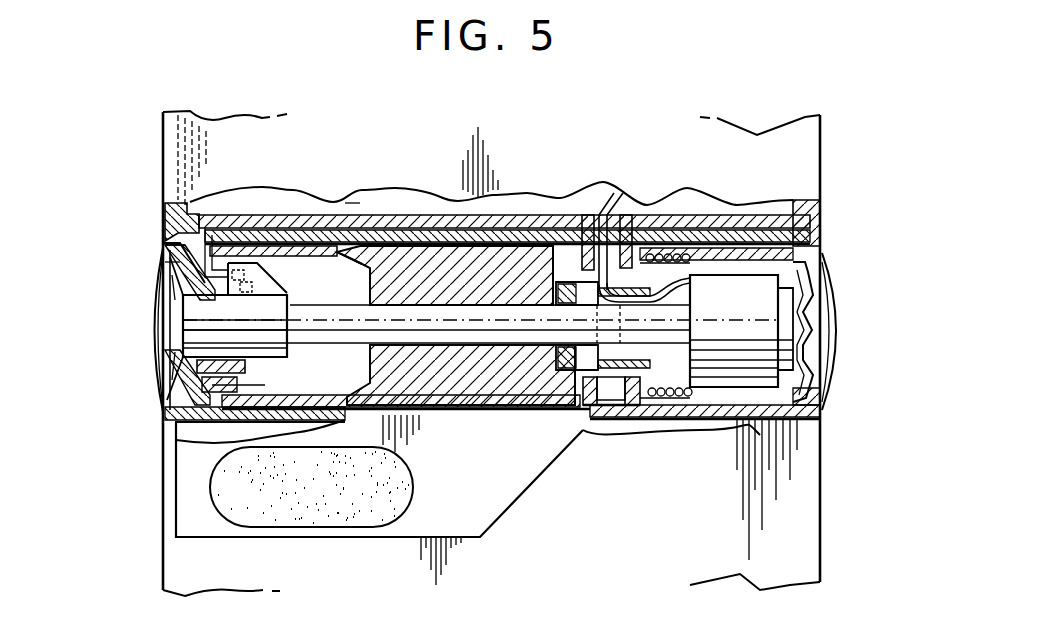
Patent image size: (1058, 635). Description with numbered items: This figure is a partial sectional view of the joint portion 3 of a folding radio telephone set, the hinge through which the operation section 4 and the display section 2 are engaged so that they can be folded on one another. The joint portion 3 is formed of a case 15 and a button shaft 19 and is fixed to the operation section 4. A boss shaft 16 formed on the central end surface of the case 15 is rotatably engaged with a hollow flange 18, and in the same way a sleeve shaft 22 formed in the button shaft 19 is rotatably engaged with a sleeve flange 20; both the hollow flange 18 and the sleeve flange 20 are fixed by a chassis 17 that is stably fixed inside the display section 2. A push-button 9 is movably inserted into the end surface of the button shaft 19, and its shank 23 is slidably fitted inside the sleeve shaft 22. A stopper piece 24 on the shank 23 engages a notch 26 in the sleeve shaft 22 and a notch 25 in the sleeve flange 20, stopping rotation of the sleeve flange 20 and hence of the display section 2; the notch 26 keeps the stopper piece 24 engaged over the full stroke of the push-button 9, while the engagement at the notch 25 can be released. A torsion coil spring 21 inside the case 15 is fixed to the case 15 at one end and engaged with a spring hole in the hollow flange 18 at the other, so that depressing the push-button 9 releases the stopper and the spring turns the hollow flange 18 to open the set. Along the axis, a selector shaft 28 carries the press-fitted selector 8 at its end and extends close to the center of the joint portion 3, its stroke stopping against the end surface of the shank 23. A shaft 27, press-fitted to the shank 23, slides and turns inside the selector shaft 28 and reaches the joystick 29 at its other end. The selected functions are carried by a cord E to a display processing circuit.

The display section 2 is at (797, 160).
The joint portion 3 is at (823, 366).
The operation section 4 is at (797, 518).
The selector 8 is at (520, 397).
The push-button 9 is at (158, 307).
The case 15 is at (720, 419).
The boss shaft 16 is at (577, 260).
The chassis 17 is at (352, 203).
The hollow flange 18 is at (590, 415).
The button shaft 19 is at (160, 250).
The sleeve flange 20 is at (185, 282).
The torsion coil spring 21 is at (688, 270).
The sleeve shaft 22 is at (283, 400).
The shank 23 is at (320, 350).
The stopper piece 24 is at (280, 258).
The notch 25 is at (210, 300).
The notch 26 is at (230, 318).
The shaft 27 is at (405, 235).
The selector shaft 28 is at (457, 350).
The joystick 29 is at (800, 262).
The cord E is at (603, 207).